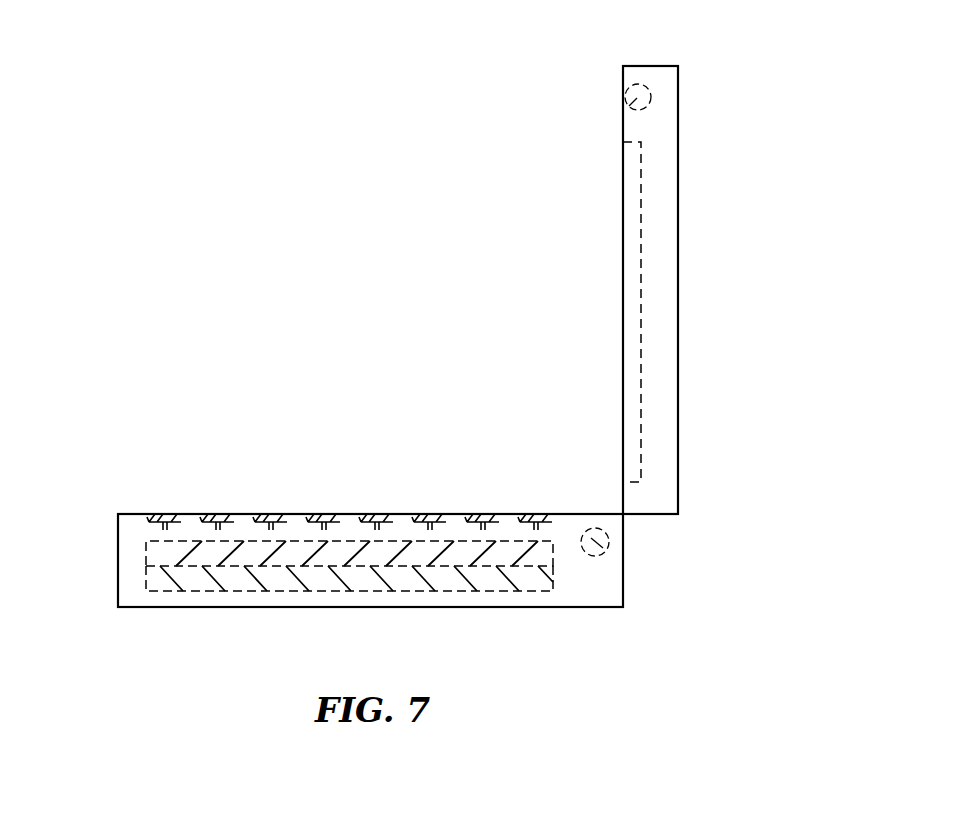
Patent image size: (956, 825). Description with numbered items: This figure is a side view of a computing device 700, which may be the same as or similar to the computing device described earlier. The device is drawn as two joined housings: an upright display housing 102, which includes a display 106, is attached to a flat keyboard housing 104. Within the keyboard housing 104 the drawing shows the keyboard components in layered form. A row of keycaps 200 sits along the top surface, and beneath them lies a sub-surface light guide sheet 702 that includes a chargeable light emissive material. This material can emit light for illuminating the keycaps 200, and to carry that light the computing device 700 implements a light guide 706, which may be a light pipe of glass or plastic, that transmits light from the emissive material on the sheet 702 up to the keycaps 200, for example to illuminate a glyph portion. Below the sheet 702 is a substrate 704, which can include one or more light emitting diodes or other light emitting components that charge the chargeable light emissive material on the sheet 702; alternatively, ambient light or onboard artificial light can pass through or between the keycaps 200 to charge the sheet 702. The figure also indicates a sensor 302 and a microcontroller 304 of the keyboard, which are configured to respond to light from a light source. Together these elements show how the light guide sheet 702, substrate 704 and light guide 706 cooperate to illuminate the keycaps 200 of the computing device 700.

The computing device 700 is at (238, 294).
The display housing 102 is at (666, 353).
The keyboard housing 104 is at (578, 591).
The display 106 is at (631, 282).
The sensor 302 is at (628, 101).
The microcontroller 304 is at (606, 553).
The keycaps 200 is at (160, 515).
The sub-surface light guide sheet 702 is at (148, 548).
The substrate 704 is at (148, 580).
The light guide 706 is at (250, 515).